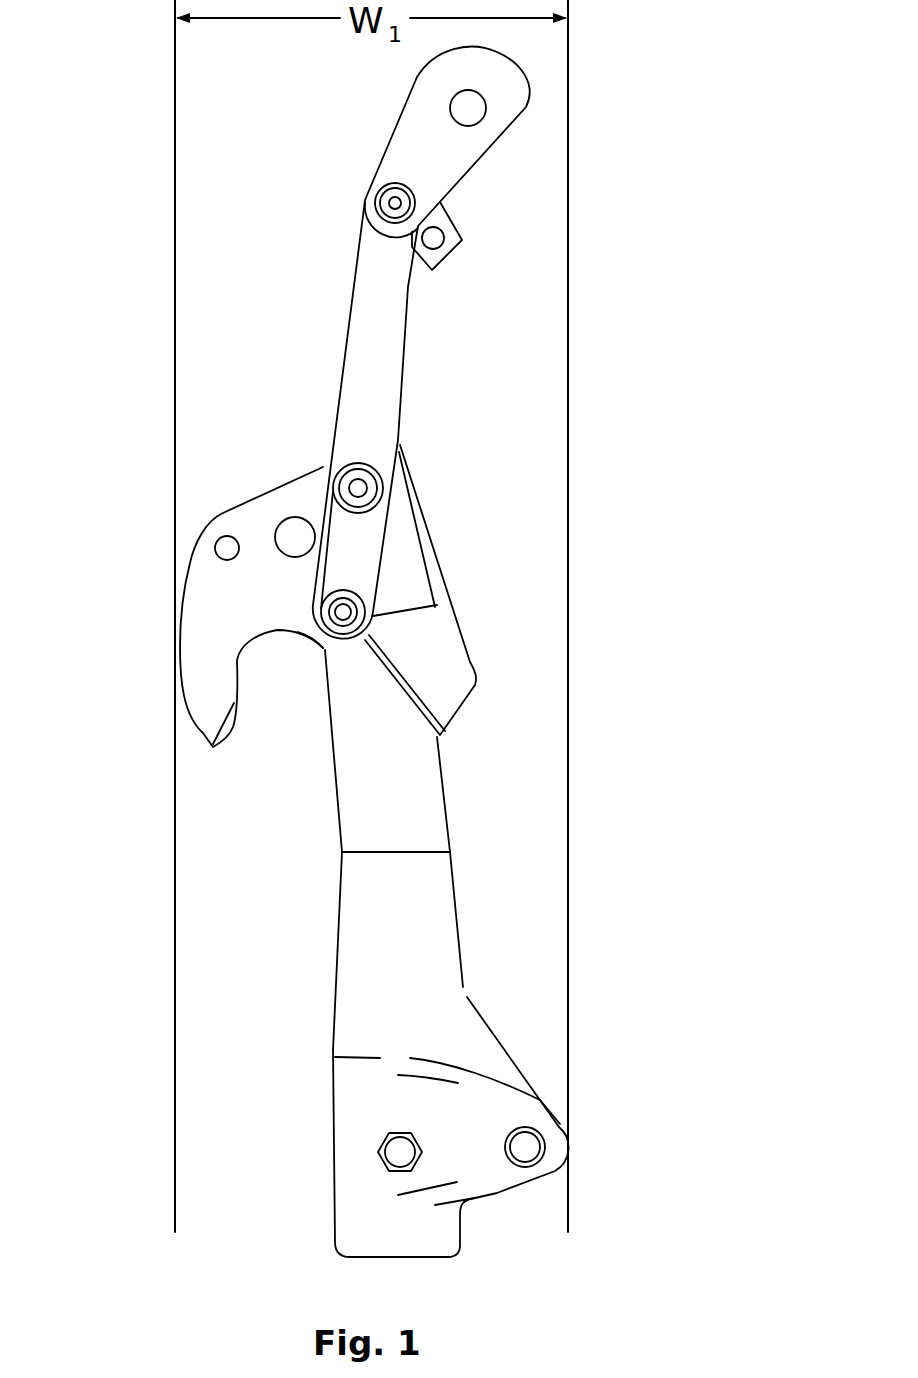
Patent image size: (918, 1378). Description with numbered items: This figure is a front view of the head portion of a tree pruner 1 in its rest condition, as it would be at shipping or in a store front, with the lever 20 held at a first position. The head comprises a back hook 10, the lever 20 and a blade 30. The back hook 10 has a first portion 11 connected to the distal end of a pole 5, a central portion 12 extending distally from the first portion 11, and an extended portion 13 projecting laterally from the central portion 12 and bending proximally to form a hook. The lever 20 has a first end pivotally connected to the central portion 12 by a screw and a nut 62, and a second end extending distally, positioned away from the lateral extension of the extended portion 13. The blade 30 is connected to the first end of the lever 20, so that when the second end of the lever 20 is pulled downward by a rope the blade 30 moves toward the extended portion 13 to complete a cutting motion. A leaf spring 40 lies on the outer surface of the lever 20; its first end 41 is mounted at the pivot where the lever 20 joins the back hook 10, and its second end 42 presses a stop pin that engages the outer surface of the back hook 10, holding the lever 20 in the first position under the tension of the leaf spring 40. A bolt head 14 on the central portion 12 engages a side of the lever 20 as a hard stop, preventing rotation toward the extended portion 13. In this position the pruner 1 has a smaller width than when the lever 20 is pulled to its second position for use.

The tree pruner 1 is at (258, 296).
The pole 5 is at (422, 952).
The back hook 10 is at (219, 512).
The first portion 11 is at (403, 787).
The central portion 12 is at (328, 653).
The extended portion 13 is at (202, 697).
The bolt head 14 is at (296, 516).
The lever 20 is at (406, 376).
The blade 30 is at (430, 690).
The leaf spring 40 is at (346, 550).
The first end 41 is at (376, 614).
The second end 42 is at (362, 488).
The nut 62 is at (340, 611).